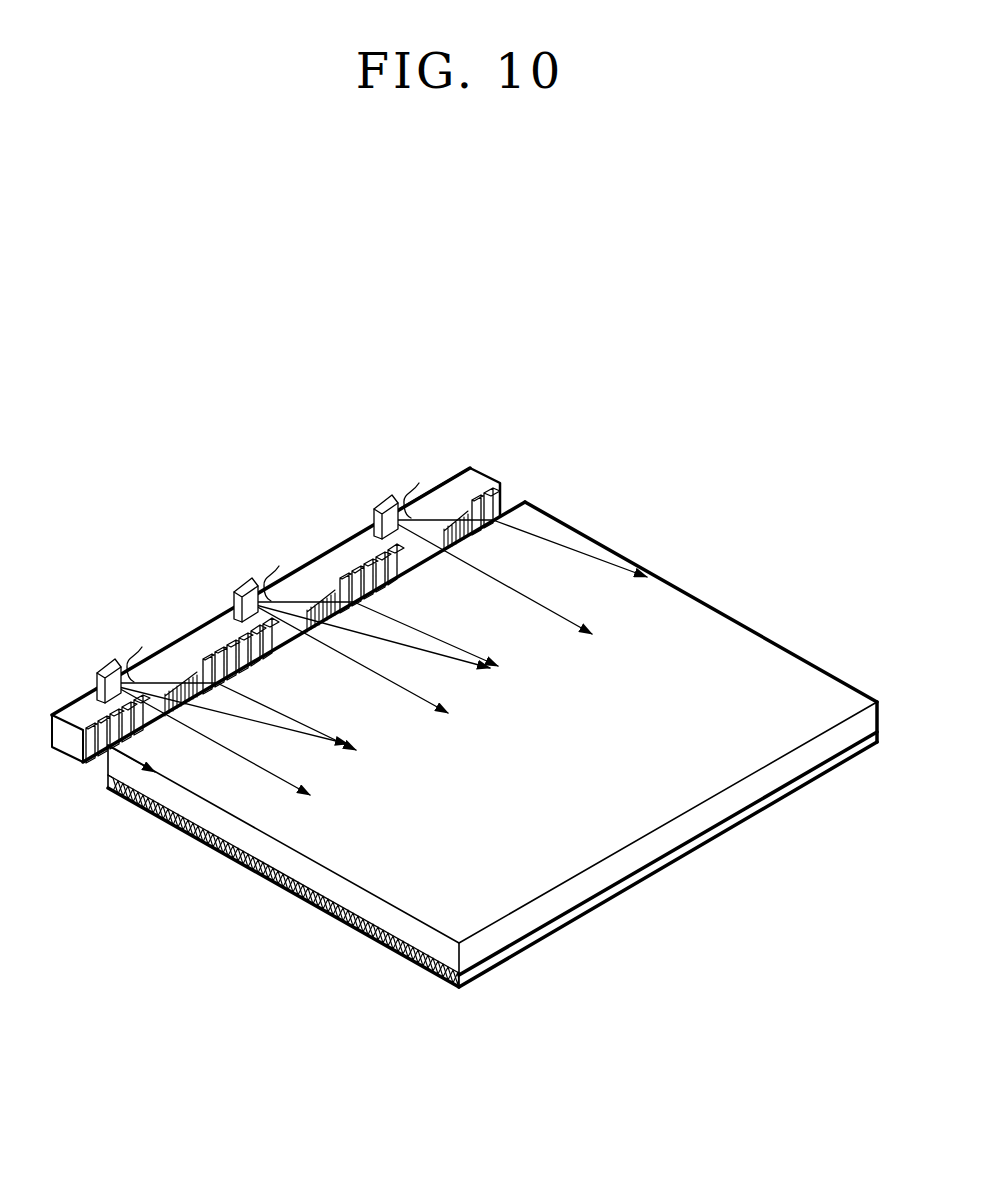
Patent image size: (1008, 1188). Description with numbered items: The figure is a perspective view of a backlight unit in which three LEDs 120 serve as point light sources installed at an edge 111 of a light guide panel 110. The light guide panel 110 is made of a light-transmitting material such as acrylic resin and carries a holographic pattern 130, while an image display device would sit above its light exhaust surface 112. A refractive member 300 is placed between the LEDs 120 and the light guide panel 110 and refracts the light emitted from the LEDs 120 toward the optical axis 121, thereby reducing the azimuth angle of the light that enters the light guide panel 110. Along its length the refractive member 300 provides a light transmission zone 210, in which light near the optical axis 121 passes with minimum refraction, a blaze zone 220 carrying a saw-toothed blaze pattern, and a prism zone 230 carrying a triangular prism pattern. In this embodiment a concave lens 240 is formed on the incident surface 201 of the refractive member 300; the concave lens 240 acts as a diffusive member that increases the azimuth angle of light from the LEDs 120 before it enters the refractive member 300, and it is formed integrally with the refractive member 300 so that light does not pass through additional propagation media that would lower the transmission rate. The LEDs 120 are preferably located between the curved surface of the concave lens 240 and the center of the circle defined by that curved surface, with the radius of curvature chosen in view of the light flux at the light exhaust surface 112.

The light guide panel 110 is at (838, 661).
The edge 111 is at (516, 500).
The light exhaust surface 112 is at (710, 612).
The LEDs 120 is at (107, 662).
The optical axis 121 is at (268, 778).
The holographic pattern 130 is at (323, 918).
The incident surface 201 is at (457, 472).
The light transmission zone 210 is at (157, 693).
The blaze zone 220 is at (190, 670).
The prism zone 230 is at (220, 648).
The concave lens 240 is at (404, 502).
The refractive member 300 is at (501, 464).